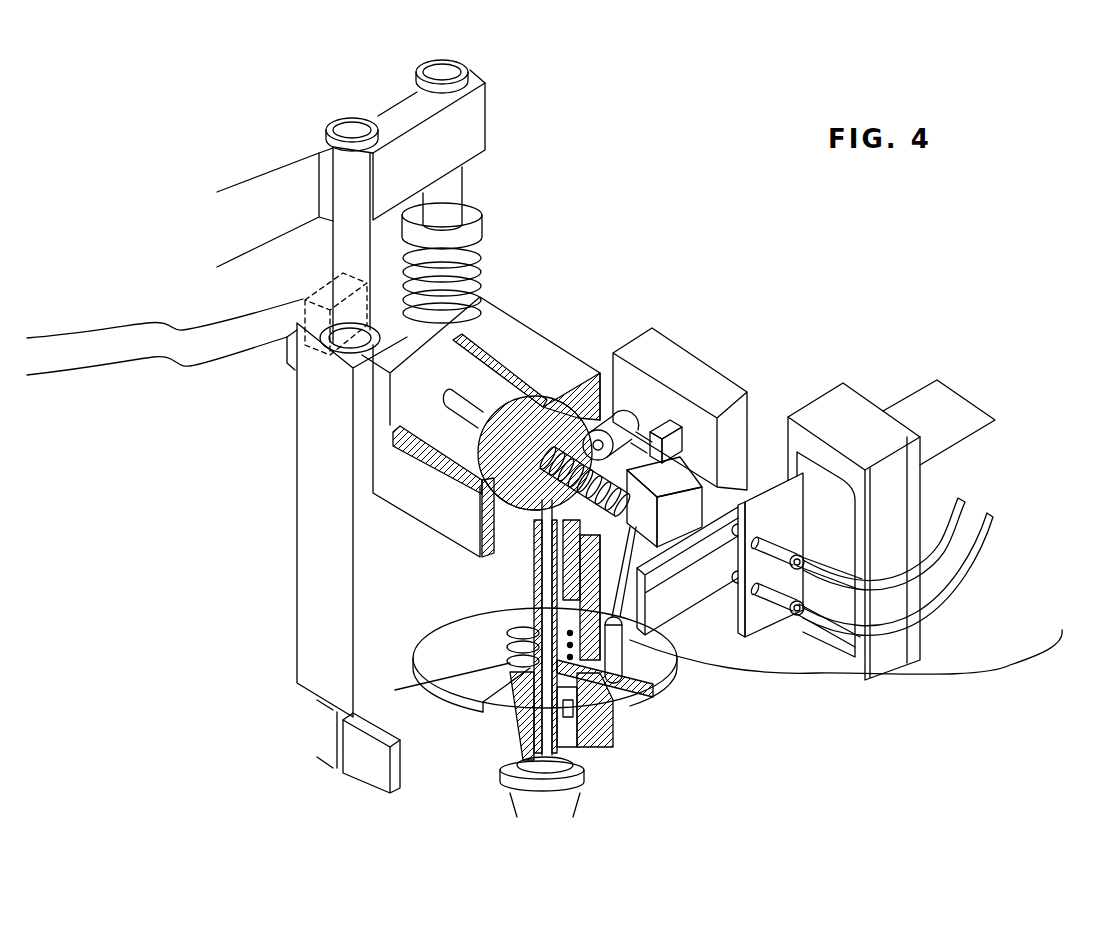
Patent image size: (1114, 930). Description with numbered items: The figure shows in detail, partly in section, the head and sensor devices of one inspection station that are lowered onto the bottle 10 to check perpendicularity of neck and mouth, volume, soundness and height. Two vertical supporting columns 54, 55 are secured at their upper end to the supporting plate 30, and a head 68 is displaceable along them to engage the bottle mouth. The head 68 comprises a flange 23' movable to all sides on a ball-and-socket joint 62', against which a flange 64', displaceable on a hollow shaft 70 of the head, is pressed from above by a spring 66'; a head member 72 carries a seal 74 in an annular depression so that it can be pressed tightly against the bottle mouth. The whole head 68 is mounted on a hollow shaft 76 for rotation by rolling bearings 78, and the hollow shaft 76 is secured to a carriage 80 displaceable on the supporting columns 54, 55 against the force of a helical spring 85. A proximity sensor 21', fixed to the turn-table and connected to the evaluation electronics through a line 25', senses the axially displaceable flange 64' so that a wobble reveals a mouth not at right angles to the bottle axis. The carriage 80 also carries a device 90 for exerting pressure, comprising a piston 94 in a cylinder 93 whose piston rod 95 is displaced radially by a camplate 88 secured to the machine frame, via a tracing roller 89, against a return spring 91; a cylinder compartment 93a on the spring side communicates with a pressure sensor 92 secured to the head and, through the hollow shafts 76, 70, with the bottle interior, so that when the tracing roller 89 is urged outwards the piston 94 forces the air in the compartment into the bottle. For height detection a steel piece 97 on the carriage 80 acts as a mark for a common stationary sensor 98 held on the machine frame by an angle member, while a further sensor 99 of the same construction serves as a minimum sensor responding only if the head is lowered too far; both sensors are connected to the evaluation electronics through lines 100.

The supporting plate 30 is at (226, 200).
The supporting column 54 is at (470, 128).
The supporting column 55 is at (345, 242).
The helical spring 85 is at (470, 367).
The device for exerting pressure 90 is at (560, 312).
The cylinder 93 is at (523, 407).
The cylinder compartment 93a is at (512, 493).
The piston 94 is at (547, 372).
The piston rod 95 is at (462, 408).
The pressure sensor 92 is at (623, 420).
The return spring 91 is at (637, 457).
The line 25′ is at (727, 480).
The camplate 88 is at (80, 353).
The tracing roller 89 is at (183, 362).
The carriage 80 is at (287, 488).
The head 68 is at (350, 648).
The spring 66′ is at (393, 693).
The hollow shaft 76 is at (510, 633).
The rolling bearings 78 is at (510, 615).
The shaft 70 is at (523, 747).
The head member 72 is at (615, 722).
The ball-and-socket joint 62′ is at (617, 707).
The flange 23′ is at (647, 695).
The proximity sensor 21′ is at (660, 675).
The seal 74 is at (565, 728).
The bottle 10 is at (513, 803).
The flange 64′ is at (700, 678).
The steel piece 97 is at (705, 640).
The sensor 99 is at (1005, 660).
The stationary sensor 98 is at (880, 427).
The lines 100 is at (987, 513).